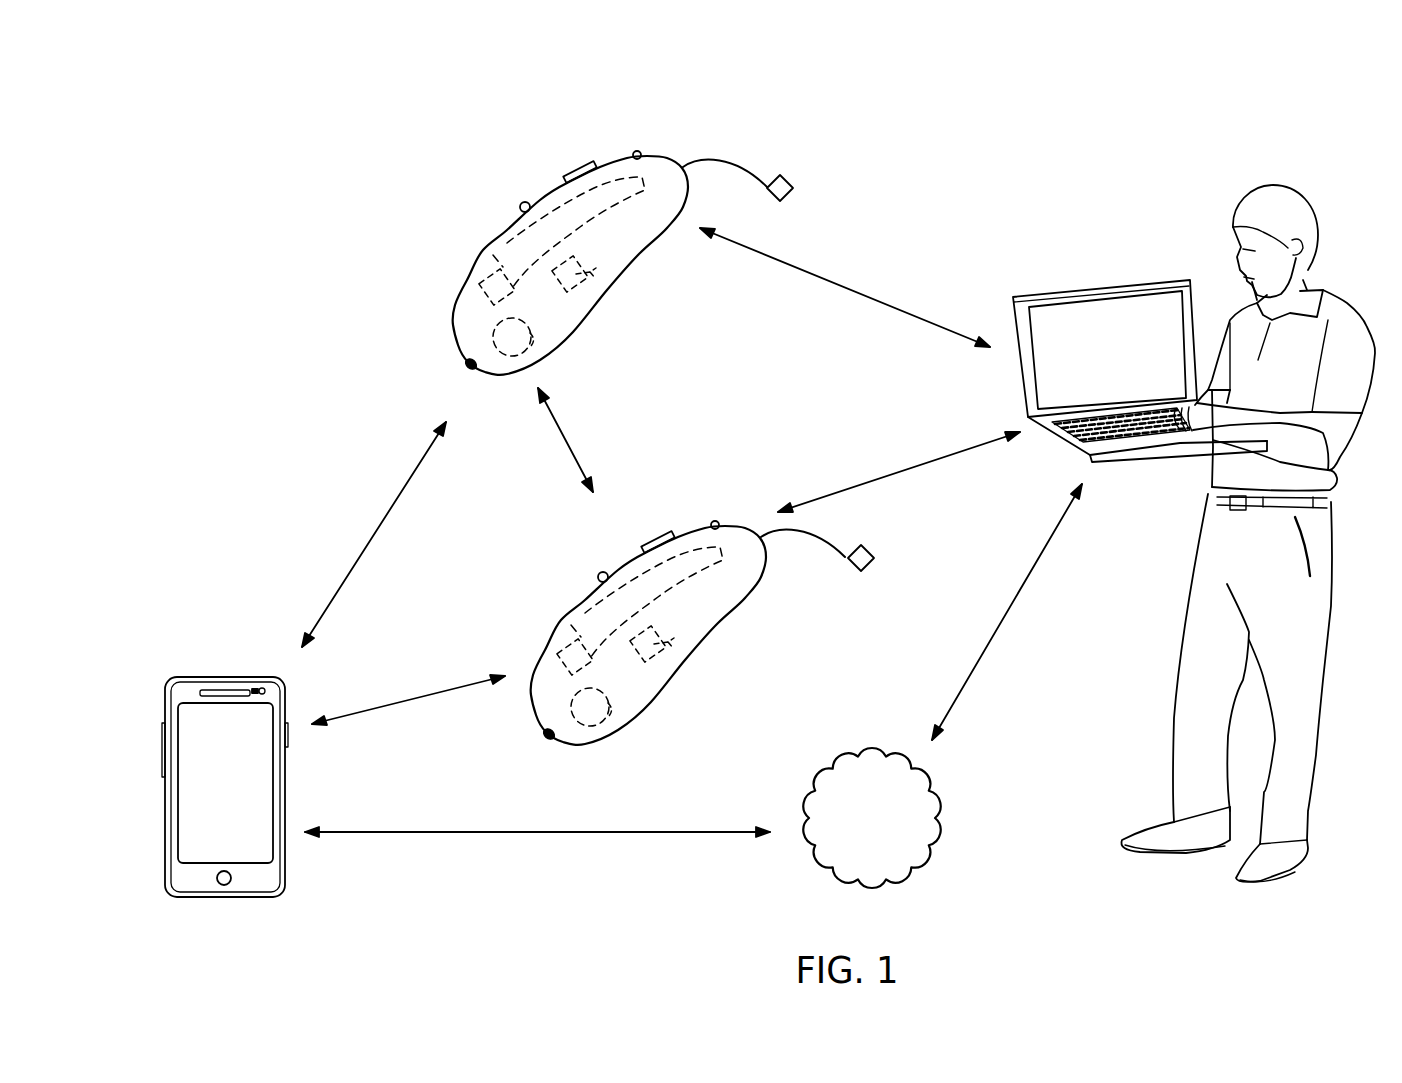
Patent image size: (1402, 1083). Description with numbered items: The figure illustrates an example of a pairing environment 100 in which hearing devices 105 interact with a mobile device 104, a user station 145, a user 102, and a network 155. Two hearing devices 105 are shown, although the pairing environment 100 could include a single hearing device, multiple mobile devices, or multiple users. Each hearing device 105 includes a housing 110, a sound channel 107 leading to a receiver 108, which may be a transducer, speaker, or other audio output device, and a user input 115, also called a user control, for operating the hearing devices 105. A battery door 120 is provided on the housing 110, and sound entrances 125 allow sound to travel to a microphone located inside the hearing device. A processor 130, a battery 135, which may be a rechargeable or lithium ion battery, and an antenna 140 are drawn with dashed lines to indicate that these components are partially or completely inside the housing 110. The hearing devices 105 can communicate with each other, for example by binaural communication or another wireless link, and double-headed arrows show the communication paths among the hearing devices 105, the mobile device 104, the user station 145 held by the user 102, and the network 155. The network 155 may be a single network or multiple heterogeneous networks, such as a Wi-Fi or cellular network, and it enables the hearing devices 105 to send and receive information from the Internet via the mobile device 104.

The pairing environment 100 is at (1014, 176).
The user 102 is at (1287, 185).
The mobile device 104 is at (228, 676).
The hearing devices 105 is at (657, 150).
The sound channel 107 is at (735, 160).
The receiver 108 is at (787, 176).
The housing 110 is at (503, 376).
The user input 115 is at (577, 167).
The battery door 120 is at (462, 369).
The sound entrances 125 is at (636, 150).
The processor 130 is at (612, 287).
The battery 135 is at (548, 365).
The antenna 140 is at (481, 250).
The user station 145 is at (1100, 285).
The network 155 is at (835, 760).